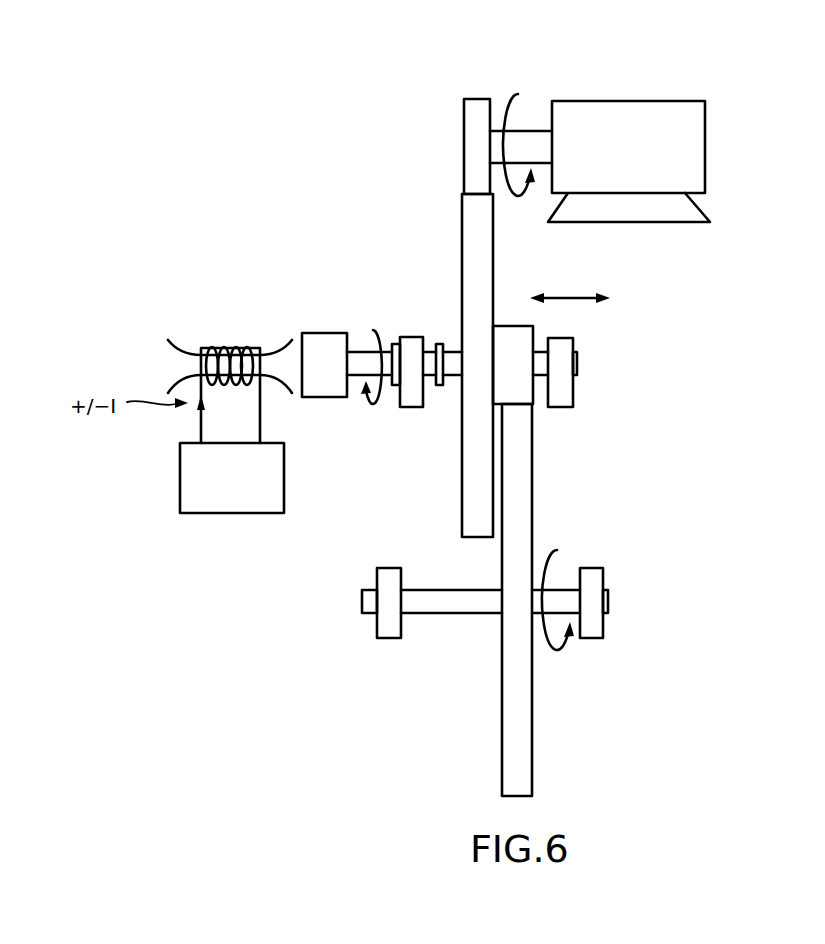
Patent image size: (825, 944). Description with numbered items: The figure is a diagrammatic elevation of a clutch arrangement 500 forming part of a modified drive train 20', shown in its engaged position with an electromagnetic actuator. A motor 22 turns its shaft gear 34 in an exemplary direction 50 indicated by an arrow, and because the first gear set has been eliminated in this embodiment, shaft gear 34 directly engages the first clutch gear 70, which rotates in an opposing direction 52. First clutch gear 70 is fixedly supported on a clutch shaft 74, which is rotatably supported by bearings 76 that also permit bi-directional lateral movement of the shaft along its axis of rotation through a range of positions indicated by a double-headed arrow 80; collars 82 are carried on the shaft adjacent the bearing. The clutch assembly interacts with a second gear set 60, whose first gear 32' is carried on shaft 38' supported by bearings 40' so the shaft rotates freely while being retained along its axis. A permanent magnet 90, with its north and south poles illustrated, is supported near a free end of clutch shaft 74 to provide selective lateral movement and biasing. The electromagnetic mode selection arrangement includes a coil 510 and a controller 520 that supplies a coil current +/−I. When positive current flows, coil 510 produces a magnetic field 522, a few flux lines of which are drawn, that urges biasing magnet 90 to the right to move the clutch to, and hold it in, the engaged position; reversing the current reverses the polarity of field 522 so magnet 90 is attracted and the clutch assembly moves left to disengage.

The drive train 20' is at (745, 226).
The motor 22 is at (615, 160).
The first gear 32' is at (552, 600).
The shaft gear 34 is at (476, 99).
The first gear set shaft 38' is at (516, 594).
The bearings 40' is at (507, 635).
The direction 50 is at (520, 96).
The opposing direction 52 is at (375, 395).
The second gear set 60 is at (548, 478).
The first clutch gear 70 is at (494, 262).
The clutch shaft 74 is at (578, 362).
The bearings 76 is at (560, 408).
The double-headed arrow 80 is at (570, 297).
The collars 82 is at (440, 342).
The permanent magnet 90 is at (322, 398).
The clutch arrangement 500 is at (660, 380).
The coil 510 is at (218, 347).
The controller 520 is at (213, 491).
The magnetic field 522 is at (280, 348).